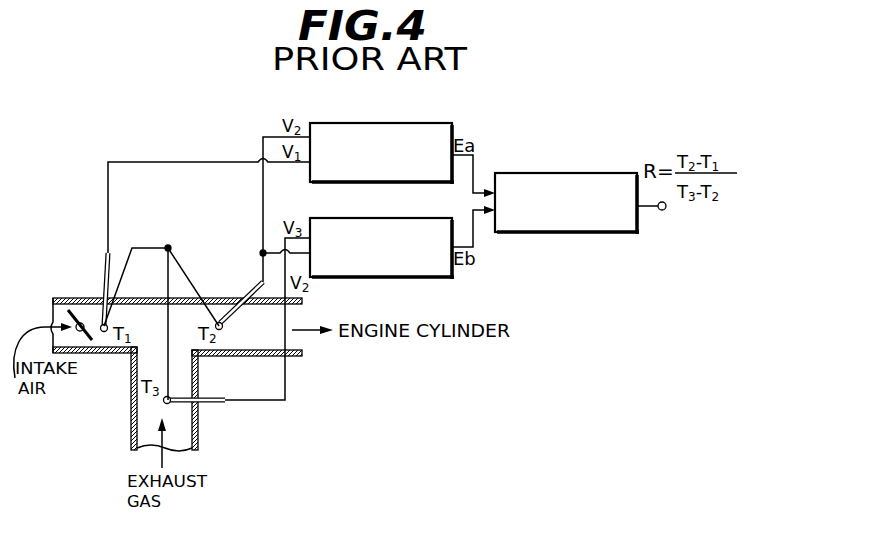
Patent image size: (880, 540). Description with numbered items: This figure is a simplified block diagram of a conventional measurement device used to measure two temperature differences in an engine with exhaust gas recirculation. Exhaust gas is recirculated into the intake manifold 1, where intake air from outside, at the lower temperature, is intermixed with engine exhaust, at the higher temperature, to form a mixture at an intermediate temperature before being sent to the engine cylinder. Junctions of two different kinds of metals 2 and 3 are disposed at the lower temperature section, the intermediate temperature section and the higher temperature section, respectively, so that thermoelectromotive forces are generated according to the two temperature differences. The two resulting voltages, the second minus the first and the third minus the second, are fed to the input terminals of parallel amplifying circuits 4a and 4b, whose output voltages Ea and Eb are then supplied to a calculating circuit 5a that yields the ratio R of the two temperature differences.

The intake manifold 1 is at (258, 337).
The metal 2 is at (170, 278).
The metal 3 is at (100, 271).
The amplifying circuit 4a is at (425, 123).
The amplifying circuit 4b is at (402, 218).
The calculating circuit 5a is at (615, 173).